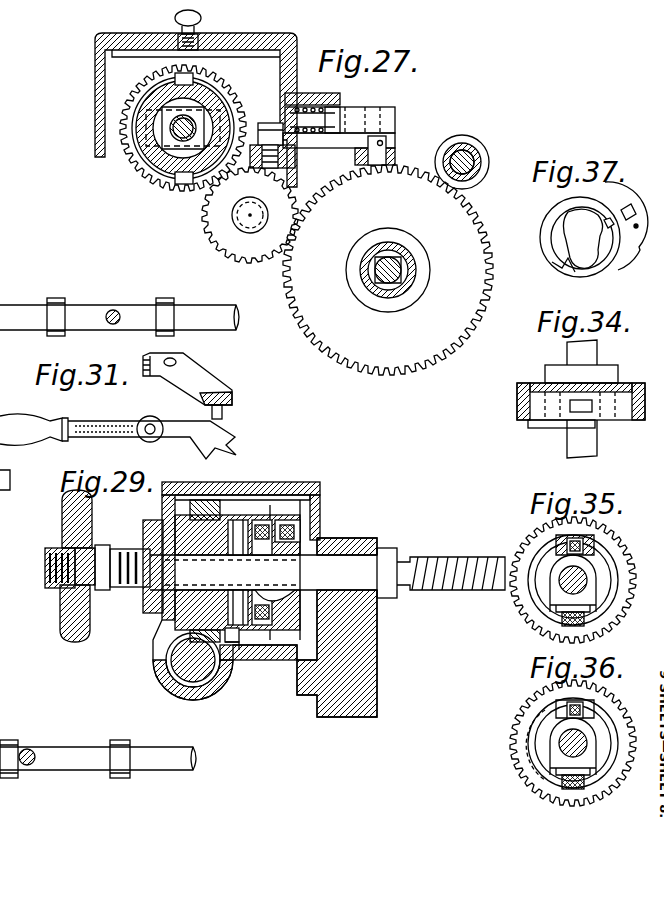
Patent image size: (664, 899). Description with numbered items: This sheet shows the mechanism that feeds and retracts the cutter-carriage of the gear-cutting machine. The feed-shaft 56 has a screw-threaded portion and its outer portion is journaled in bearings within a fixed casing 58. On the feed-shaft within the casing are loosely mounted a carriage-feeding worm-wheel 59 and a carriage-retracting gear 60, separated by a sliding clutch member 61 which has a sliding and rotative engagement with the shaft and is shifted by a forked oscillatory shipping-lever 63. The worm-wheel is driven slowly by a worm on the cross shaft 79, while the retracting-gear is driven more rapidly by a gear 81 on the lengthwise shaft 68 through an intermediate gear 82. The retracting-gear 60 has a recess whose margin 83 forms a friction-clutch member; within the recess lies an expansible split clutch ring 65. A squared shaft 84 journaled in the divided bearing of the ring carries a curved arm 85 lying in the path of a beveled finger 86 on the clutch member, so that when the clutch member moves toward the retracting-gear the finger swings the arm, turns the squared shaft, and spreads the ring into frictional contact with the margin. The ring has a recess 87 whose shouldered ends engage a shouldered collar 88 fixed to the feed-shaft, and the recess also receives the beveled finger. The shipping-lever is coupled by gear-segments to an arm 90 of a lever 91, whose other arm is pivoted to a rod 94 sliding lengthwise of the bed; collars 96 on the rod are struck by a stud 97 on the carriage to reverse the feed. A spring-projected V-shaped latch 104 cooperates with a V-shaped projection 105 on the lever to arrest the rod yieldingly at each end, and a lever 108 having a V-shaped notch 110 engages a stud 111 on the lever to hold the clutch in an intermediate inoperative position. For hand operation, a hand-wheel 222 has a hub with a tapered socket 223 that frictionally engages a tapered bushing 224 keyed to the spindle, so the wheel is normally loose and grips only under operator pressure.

In FIG. 27, the feed-shaft 56 is at (165, 140).
In FIG. 29, the feed-shaft 56 is at (432, 560).
In FIG. 35, the feed-shaft 56 is at (560, 588).
In FIG. 36, the feed-shaft 56 is at (560, 752).
In FIG. 29, the fixed casing 58 is at (280, 482).
In FIG. 29, the carriage-feeding worm-wheel 59 is at (200, 500).
In FIG. 27, the carriage-retracting gear 60 is at (160, 178).
In FIG. 29, the carriage-retracting gear 60 is at (300, 520).
In FIG. 34, the carriage-retracting gear 60 is at (522, 410).
In FIG. 35, the carriage-retracting gear 60 is at (528, 560).
In FIG. 36, the carriage-retracting gear 60 is at (528, 748).
In FIG. 27, the sliding clutch member 61 is at (146, 118).
In FIG. 29, the sliding clutch member 61 is at (236, 520).
In FIG. 27, the shipping-lever 63 is at (250, 123).
In FIG. 29, the shipping-lever 63 is at (240, 648).
In FIG. 37, the expansible clutch ring 65 is at (630, 206).
In FIG. 34, the expansible clutch ring 65 is at (545, 400).
In FIG. 35, the expansible clutch ring 65 is at (546, 556).
In FIG. 27, the shaft 68 is at (368, 280).
In FIG. 29, the shaft 79 is at (200, 682).
In FIG. 27, the gear 81 is at (330, 342).
In FIG. 27, the intermediate gear 82 is at (240, 240).
In FIG. 29, the margin of recess 83 is at (260, 520).
In FIG. 35, the margin of recess 83 is at (608, 555).
In FIG. 36, the margin of recess 83 is at (602, 715).
In FIG. 29, the squared shaft 84 is at (305, 530).
In FIG. 37, the squared shaft 84 is at (606, 230).
In FIG. 35, the squared shaft 84 is at (580, 540).
In FIG. 36, the squared shaft 84 is at (566, 706).
In FIG. 34, the curved arm 85 is at (545, 428).
In FIG. 36, the curved arm 85 is at (536, 728).
In FIG. 29, the beveled finger 86 is at (182, 683).
In FIG. 35, the beveled finger 86 is at (580, 626).
In FIG. 36, the beveled finger 86 is at (573, 790).
In FIG. 37, the recess 87 is at (558, 250).
In FIG. 35, the shouldered collar 88 is at (556, 612).
In FIG. 36, the shouldered collar 88 is at (556, 776).
In FIG. 31, the arm of lever 90 is at (152, 353).
In FIG. 27, the lever 91 is at (322, 148).
In FIG. 31, the lever 91 is at (196, 385).
In FIG. 27, the rod 94 is at (390, 160).
In FIG. 29, the rod 94 is at (6, 485).
In FIG. 31, the collars 96 is at (56, 298).
In FIG. 29, the collars 96 is at (10, 740).
In FIG. 31, the stud 97 is at (113, 310).
In FIG. 29, the stud 97 is at (30, 748).
In FIG. 27, the V-shaped latch 104 is at (357, 107).
In FIG. 27, the V-shaped projection 105 is at (395, 107).
In FIG. 31, the lever 108 is at (178, 420).
In FIG. 31, the V-shaped notch 110 is at (226, 429).
In FIG. 31, the stud 111 is at (226, 408).
In FIG. 29, the hand-wheel 222 is at (68, 520).
In FIG. 29, the tapered socket 223 is at (103, 545).
In FIG. 29, the tapered bushing 224 is at (97, 595).